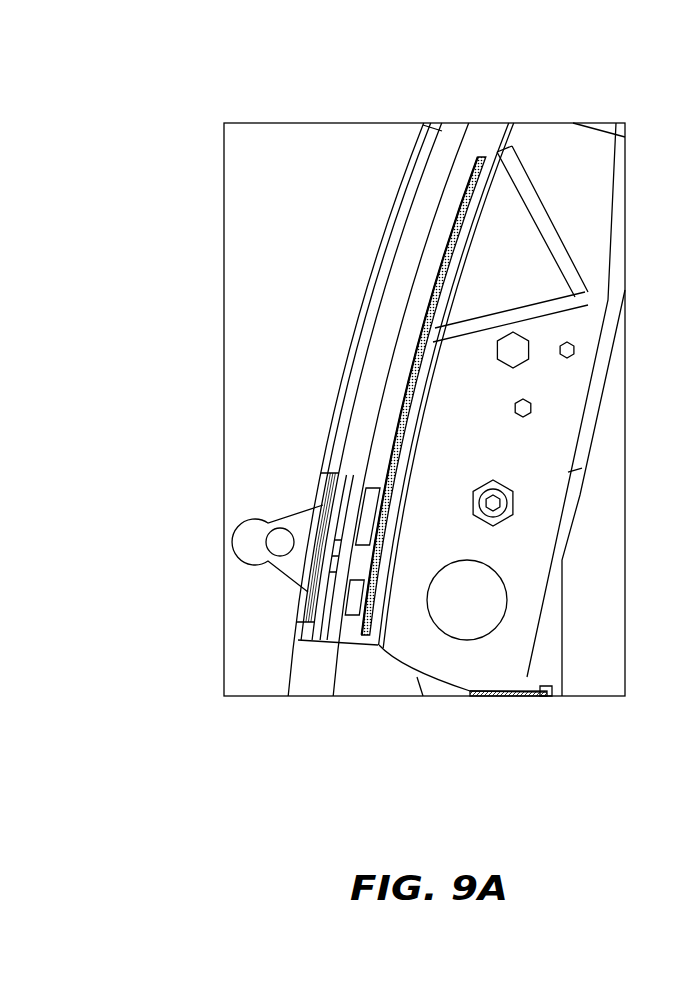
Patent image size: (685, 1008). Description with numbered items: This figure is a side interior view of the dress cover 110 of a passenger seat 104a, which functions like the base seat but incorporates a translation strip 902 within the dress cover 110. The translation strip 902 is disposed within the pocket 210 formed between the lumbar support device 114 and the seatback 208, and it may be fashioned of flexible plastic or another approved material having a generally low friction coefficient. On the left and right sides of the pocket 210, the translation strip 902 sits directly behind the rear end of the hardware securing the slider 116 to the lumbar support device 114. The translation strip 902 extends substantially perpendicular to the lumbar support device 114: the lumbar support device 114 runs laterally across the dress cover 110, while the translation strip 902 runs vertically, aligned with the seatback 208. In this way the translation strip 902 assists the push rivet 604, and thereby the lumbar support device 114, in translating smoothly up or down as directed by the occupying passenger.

The passenger seat 104a is at (168, 90).
The dress cover 110 is at (363, 302).
The lumbar support device 114 is at (413, 235).
The slider 116 is at (292, 525).
The seatback 208 is at (513, 237).
The pocket 210 is at (436, 176).
The push rivet 604 is at (366, 585).
The translation strip 902 is at (398, 423).